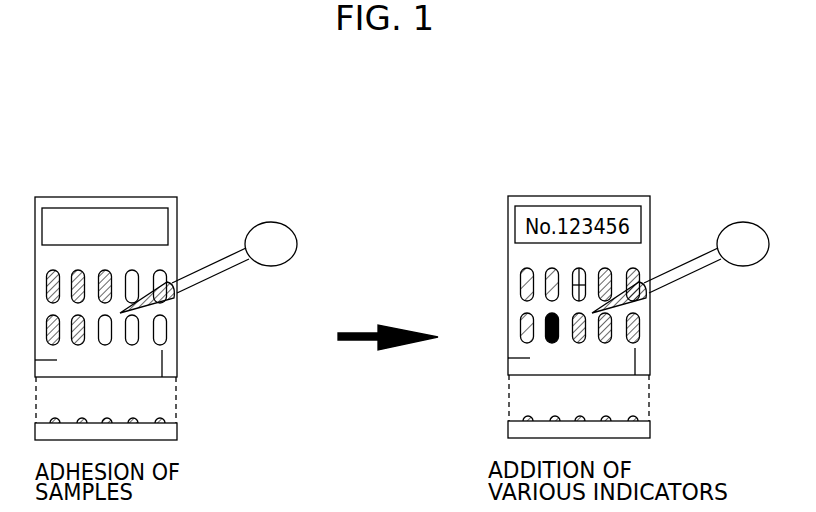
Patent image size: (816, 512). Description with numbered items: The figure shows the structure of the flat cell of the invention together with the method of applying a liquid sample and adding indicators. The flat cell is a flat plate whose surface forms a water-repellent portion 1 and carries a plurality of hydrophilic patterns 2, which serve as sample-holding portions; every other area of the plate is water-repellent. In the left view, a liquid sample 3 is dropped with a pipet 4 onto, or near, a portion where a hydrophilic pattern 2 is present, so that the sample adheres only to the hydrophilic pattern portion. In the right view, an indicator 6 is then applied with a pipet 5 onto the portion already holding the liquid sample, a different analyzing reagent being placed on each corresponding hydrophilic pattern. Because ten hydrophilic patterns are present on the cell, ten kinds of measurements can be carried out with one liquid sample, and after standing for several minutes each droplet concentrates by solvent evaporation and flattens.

The water-repellent portion 1 is at (146, 197).
The hydrophilic pattern 2 is at (172, 345).
The liquid sample 3 is at (177, 300).
The pipet 4 is at (208, 248).
The pipet 5 is at (727, 224).
The analyzing reagent (indicator) 6 is at (647, 300).